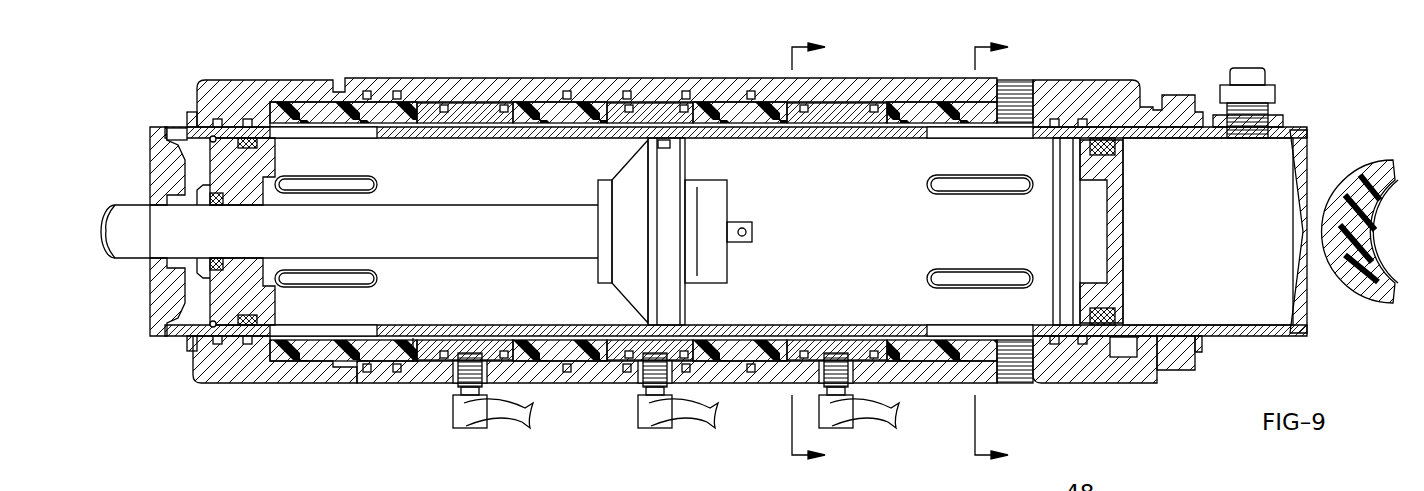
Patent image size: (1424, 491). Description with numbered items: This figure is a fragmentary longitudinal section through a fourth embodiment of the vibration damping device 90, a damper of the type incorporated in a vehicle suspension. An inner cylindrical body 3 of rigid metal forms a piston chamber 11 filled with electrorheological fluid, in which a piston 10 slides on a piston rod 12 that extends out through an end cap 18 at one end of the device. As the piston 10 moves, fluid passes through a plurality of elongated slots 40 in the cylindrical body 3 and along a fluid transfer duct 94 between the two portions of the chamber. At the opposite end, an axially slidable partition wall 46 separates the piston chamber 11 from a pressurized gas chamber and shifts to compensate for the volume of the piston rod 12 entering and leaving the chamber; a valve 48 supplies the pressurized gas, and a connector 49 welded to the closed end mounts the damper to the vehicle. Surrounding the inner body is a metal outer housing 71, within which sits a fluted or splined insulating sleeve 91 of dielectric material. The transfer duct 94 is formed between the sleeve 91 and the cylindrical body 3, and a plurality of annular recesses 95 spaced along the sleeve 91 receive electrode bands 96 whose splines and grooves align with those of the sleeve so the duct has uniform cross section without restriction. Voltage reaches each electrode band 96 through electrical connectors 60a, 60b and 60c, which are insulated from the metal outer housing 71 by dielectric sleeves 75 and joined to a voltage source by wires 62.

The cylindrical body 3 is at (858, 332).
The piston 10 is at (668, 172).
The piston chamber 11 is at (1008, 253).
The piston rod 12 is at (460, 212).
The end cap 18 is at (157, 332).
The elongated slots 40 is at (957, 178).
The partition wall 46 is at (1125, 222).
The valve 48 is at (1257, 70).
The connector 49 is at (1372, 170).
The electrical connector 60a is at (468, 430).
The electrical connector 60b is at (655, 430).
The electrical connector 60c is at (852, 428).
The wires 62 is at (508, 414).
The outer housing 71 is at (1102, 382).
The dielectric insulating sleeves 75 is at (455, 366).
The vibration damping device 90 is at (1150, 73).
The insulating sleeve 91 is at (935, 356).
The fluid transfer duct 94 is at (766, 336).
The annular recesses 95 is at (1010, 354).
The electrode bands 96 is at (642, 104).